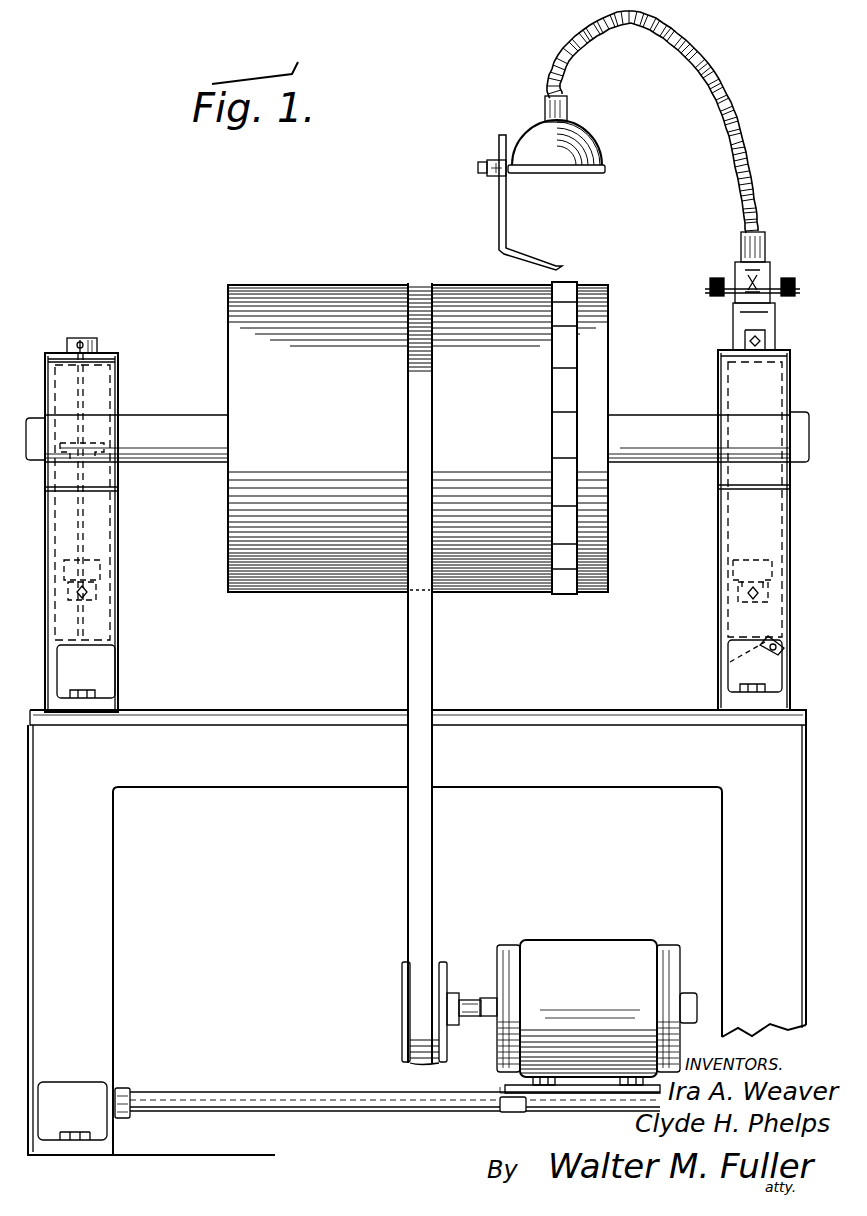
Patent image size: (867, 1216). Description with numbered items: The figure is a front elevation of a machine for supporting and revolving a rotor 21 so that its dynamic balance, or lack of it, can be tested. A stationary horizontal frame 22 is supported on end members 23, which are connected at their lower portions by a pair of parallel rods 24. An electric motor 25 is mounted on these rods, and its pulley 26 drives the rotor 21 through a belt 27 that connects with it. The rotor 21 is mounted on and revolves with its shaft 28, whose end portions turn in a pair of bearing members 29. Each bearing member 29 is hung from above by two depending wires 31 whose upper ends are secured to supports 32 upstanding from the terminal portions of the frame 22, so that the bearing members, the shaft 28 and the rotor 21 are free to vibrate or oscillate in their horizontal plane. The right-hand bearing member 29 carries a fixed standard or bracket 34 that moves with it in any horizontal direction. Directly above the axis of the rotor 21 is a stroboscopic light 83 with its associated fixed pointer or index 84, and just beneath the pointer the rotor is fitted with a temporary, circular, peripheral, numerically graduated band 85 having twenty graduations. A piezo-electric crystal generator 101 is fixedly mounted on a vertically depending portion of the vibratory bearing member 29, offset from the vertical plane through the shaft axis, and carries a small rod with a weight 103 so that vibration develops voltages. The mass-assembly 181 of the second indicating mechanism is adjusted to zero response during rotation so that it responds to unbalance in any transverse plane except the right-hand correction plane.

The rotor 21 is at (268, 312).
The frame 22 is at (520, 735).
The end member 23 is at (97, 995).
The rod 24 is at (235, 1097).
The electric motor 25 is at (593, 953).
The pulley 26 is at (402, 1008).
The belt 27 is at (408, 879).
The shaft 28 is at (656, 418).
The bearing member 29 is at (100, 530).
The depending wire 31 is at (82, 396).
The support 32 is at (118, 364).
The standard 34 is at (745, 325).
The stroboscopic light 83 is at (588, 143).
The pointer 84 is at (541, 266).
The graduated band 85 is at (573, 282).
The piezo-electric crystal generator 101 is at (745, 618).
The weight 103 is at (730, 662).
The mass-assembly 181 is at (745, 283).